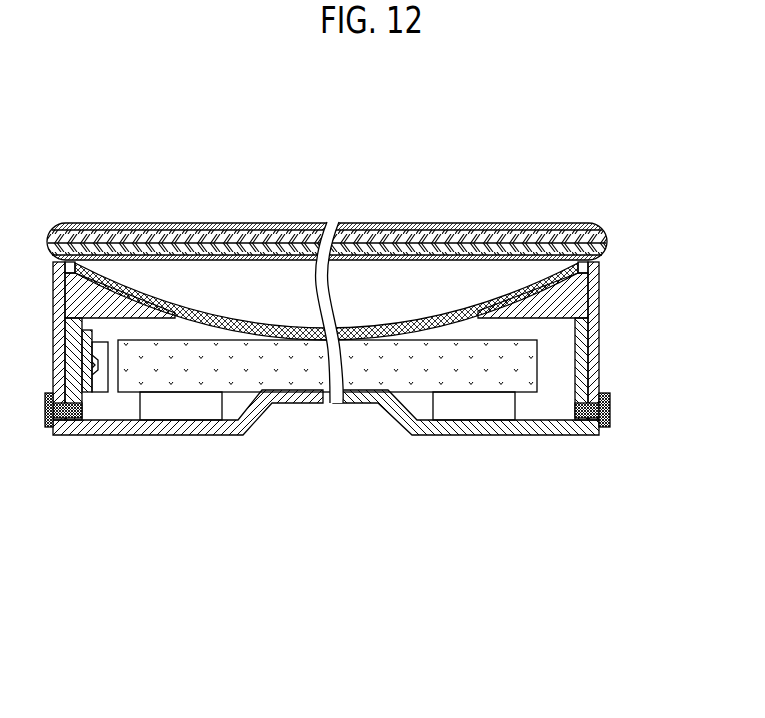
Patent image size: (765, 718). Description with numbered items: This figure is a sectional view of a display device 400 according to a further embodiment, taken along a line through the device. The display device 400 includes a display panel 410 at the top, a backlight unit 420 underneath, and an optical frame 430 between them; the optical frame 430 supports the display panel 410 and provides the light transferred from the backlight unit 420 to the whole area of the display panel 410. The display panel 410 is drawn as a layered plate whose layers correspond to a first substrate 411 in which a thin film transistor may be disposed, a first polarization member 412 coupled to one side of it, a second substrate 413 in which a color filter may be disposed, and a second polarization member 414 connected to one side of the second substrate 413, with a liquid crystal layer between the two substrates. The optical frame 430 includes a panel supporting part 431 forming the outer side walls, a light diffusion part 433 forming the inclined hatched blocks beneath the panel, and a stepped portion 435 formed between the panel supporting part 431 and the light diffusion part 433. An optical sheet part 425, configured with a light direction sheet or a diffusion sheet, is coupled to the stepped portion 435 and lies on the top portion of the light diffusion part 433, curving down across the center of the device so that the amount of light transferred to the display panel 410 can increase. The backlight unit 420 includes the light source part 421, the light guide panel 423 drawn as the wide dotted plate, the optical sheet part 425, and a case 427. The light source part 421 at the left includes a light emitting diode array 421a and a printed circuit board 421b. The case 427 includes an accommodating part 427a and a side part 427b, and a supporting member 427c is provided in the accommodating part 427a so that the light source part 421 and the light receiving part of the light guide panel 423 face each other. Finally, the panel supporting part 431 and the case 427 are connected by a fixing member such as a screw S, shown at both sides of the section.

The display device 400 is at (95, 155).
The display panel 410 is at (500, 176).
The first substrate 411 is at (394, 230).
The second substrate 413 is at (428, 237).
The first polarization member 412 is at (461, 247).
The second polarization member 414 is at (497, 256).
The optical sheet part 425 is at (244, 322).
The optical frame 430 is at (663, 270).
The panel supporting part 431 is at (594, 340).
The light diffusion part 433 is at (548, 297).
The stepped portion 435 is at (590, 264).
The backlight unit 420 is at (578, 530).
The light source part 421 is at (130, 492).
The light emitting diode array 421a is at (104, 395).
The printed circuit board 421b is at (91, 395).
The light guide panel 423 is at (367, 373).
The case 427 is at (617, 492).
The accommodating part 427a is at (545, 425).
The side part 427b is at (582, 425).
The supporting member 427c is at (503, 405).
The screw S is at (611, 412).